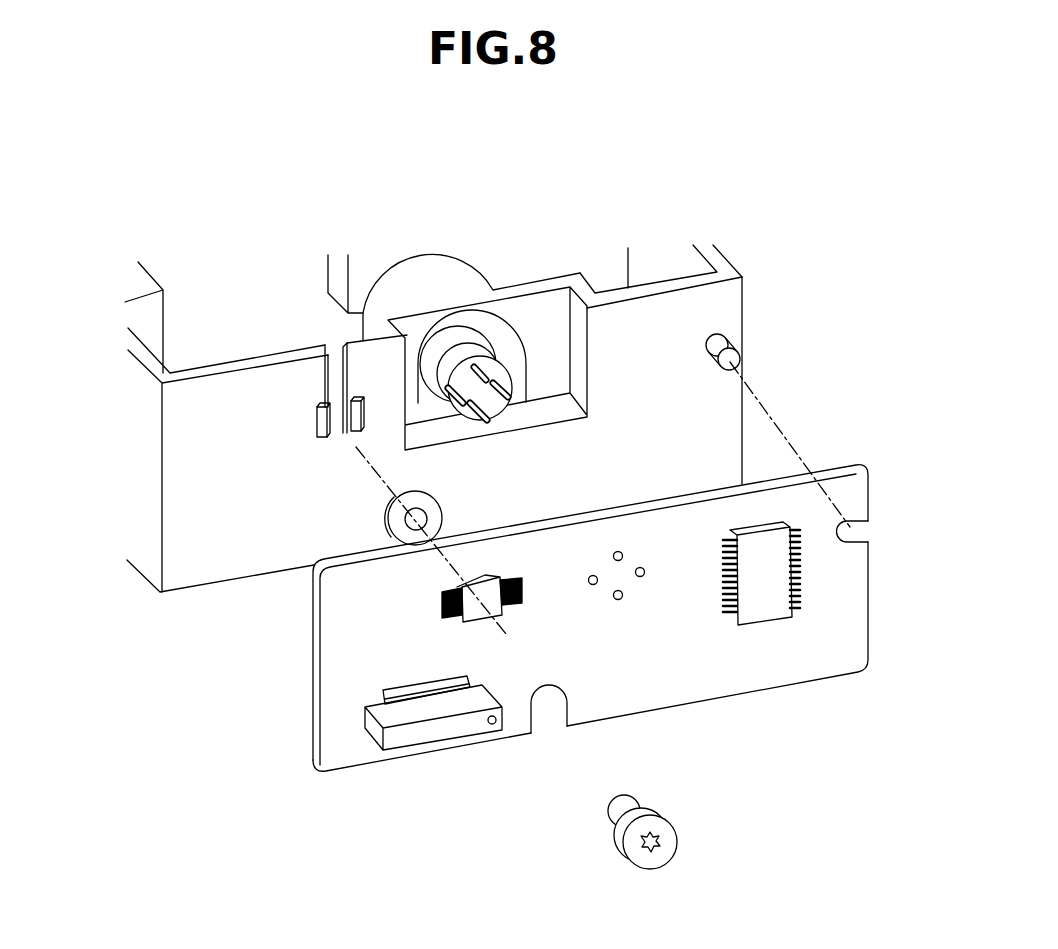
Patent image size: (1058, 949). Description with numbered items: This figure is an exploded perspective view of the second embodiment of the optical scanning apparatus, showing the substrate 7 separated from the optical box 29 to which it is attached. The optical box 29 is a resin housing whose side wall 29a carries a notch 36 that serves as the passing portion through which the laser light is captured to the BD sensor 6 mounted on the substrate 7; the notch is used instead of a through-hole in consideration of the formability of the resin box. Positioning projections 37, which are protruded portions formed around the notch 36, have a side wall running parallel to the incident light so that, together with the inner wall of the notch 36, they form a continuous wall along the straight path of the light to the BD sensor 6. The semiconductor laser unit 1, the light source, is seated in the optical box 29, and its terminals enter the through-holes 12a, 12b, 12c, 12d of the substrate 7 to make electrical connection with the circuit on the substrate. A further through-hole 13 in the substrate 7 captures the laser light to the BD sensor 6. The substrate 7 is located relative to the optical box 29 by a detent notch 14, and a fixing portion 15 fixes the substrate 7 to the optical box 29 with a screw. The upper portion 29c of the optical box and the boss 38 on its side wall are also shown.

The semiconductor laser unit 1 is at (480, 350).
The BD sensor 6 is at (463, 620).
The substrate 7 is at (852, 620).
The through-hole 12a is at (623, 553).
The through-hole 12b is at (591, 585).
The through-hole 12c is at (618, 601).
The through-hole 12d is at (640, 578).
The through-hole 13 is at (490, 578).
The detent notch 14 is at (848, 528).
The fixing portion 15 is at (543, 703).
The optical box 29 is at (143, 436).
The side wall 29a is at (224, 552).
The top portion of housing 29c is at (717, 250).
The notch 36 is at (335, 372).
The positioning projections 37 is at (350, 442).
The screw boss 38 is at (728, 343).